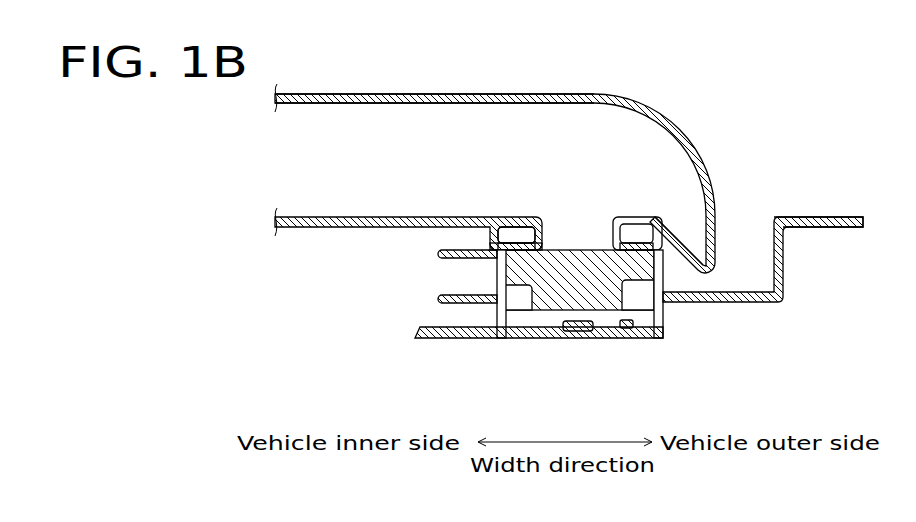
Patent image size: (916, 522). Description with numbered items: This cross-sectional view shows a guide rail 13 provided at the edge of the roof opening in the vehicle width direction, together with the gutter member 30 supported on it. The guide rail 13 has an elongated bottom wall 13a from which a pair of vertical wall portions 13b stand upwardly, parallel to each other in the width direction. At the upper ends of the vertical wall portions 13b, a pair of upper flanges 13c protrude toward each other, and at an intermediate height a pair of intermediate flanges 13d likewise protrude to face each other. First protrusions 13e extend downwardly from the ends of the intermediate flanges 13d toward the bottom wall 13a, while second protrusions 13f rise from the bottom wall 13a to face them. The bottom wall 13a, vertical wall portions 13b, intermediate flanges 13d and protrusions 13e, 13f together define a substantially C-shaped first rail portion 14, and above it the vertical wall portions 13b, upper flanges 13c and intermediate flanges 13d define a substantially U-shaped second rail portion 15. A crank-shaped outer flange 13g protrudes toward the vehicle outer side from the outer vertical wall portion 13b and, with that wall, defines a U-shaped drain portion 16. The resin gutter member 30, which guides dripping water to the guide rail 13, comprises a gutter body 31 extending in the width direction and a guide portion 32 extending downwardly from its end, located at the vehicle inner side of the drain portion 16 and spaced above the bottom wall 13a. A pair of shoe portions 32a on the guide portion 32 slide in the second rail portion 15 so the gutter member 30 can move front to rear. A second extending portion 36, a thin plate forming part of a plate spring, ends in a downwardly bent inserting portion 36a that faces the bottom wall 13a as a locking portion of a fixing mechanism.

The gutter member 30 is at (673, 122).
The gutter body 31 is at (432, 93).
The guide portion 32 is at (536, 218).
The shoe portion 32a is at (497, 247).
The guide rail 13 is at (668, 317).
The bottom wall 13a is at (606, 339).
The vertical wall portion 13b is at (494, 270).
The upper flange 13c is at (510, 228).
The intermediate flange 13d is at (488, 312).
The first protrusion 13e is at (498, 322).
The second protrusion 13f is at (522, 320).
The outer flange 13g is at (809, 216).
The first rail portion 14 is at (457, 336).
The second rail portion 15 is at (512, 248).
The drain portion 16 is at (766, 282).
The second extending portion 36 is at (579, 334).
The inserting portion 36a is at (574, 332).